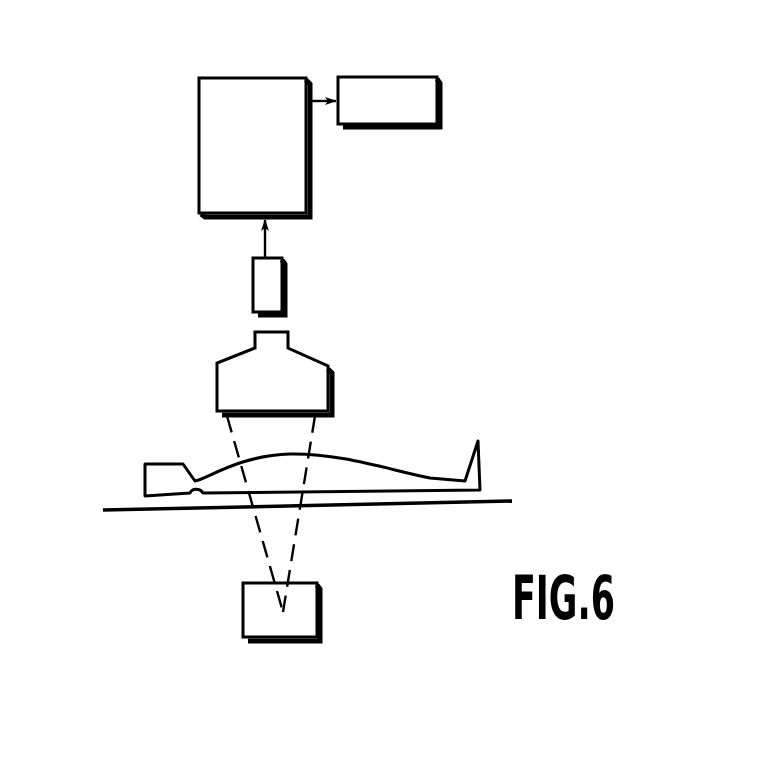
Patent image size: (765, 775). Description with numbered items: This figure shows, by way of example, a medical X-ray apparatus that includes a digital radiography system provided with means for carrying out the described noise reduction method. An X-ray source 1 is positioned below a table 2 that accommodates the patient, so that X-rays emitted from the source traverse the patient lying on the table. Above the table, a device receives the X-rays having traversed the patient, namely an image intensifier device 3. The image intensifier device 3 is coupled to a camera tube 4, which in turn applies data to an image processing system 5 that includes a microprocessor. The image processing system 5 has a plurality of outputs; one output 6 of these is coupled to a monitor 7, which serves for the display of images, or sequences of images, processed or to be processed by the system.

The X-ray source 1 is at (241, 615).
The table 2 is at (188, 511).
The image intensifier device 3 is at (216, 363).
The camera tube 4 is at (251, 287).
The image processing system 5 is at (225, 147).
The output 6 is at (320, 81).
The monitor 7 is at (447, 100).